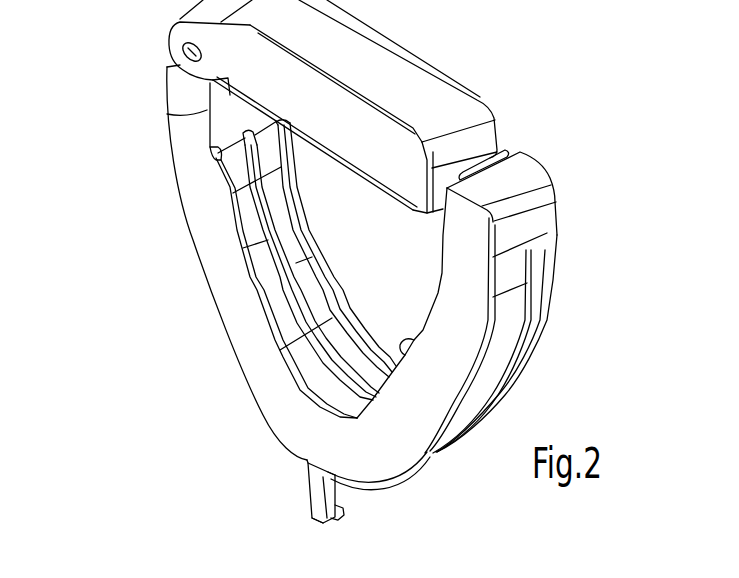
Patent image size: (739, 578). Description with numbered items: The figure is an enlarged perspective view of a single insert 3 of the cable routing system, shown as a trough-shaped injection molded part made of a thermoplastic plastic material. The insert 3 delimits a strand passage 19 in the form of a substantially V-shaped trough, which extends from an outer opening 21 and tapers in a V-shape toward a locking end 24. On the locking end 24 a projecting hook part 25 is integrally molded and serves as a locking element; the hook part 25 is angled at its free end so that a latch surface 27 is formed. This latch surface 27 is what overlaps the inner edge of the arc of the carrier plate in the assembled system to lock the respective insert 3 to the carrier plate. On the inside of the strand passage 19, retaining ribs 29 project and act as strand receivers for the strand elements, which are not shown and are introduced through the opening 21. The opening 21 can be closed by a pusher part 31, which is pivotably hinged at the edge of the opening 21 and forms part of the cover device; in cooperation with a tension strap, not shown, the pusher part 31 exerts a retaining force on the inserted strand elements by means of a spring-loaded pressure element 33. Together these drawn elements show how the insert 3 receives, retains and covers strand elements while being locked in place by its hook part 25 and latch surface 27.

The insert 3 is at (148, 232).
The strand passage 19 is at (403, 360).
The outer opening 21 is at (167, 112).
The locking end 24 is at (305, 460).
The hook part 25 is at (307, 493).
The latch surface 27 is at (342, 506).
The retaining ribs 29 is at (262, 254).
The pusher part 31 is at (433, 100).
The spring-loaded pressure element 33 is at (348, 170).